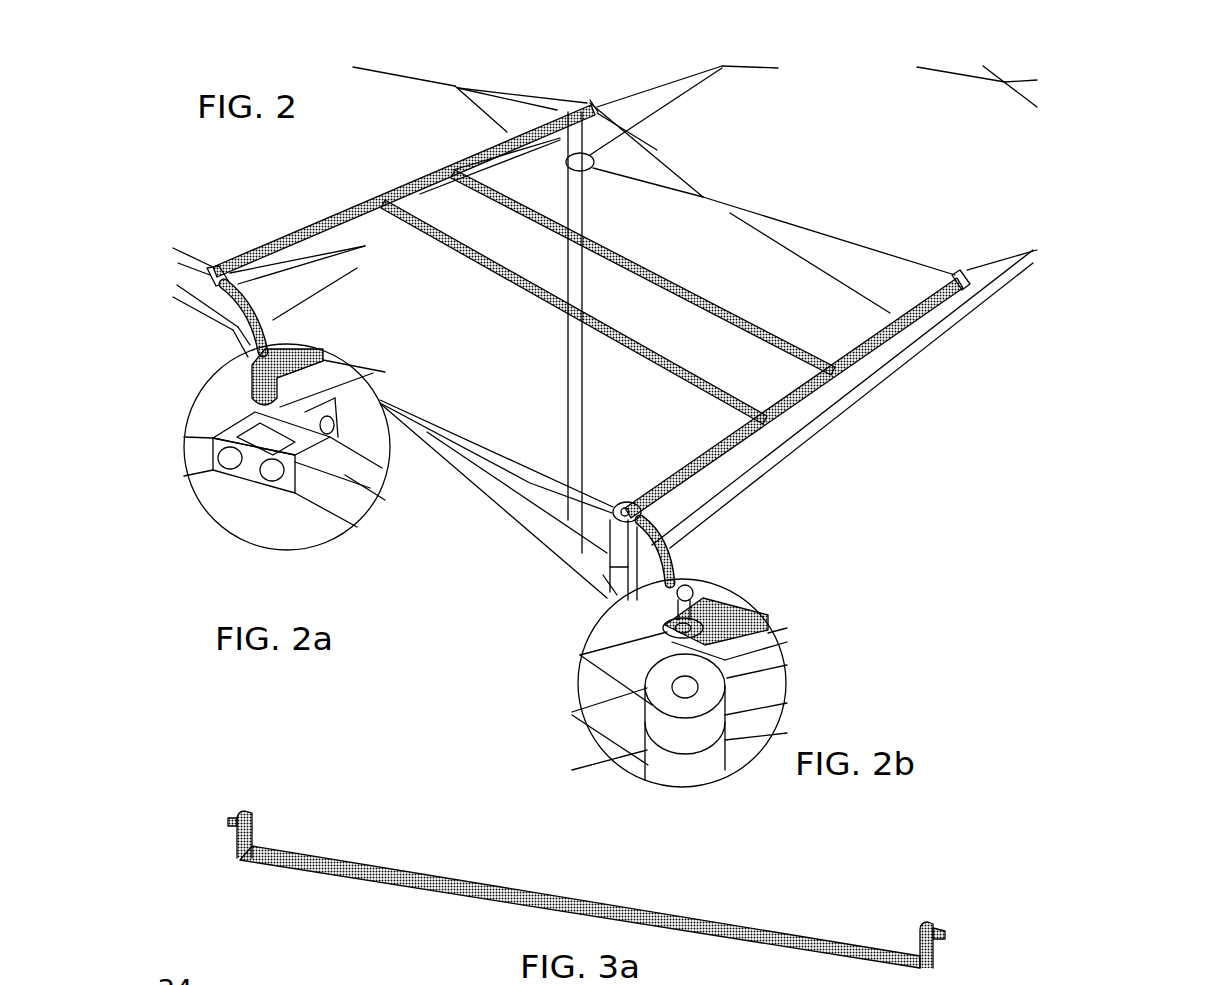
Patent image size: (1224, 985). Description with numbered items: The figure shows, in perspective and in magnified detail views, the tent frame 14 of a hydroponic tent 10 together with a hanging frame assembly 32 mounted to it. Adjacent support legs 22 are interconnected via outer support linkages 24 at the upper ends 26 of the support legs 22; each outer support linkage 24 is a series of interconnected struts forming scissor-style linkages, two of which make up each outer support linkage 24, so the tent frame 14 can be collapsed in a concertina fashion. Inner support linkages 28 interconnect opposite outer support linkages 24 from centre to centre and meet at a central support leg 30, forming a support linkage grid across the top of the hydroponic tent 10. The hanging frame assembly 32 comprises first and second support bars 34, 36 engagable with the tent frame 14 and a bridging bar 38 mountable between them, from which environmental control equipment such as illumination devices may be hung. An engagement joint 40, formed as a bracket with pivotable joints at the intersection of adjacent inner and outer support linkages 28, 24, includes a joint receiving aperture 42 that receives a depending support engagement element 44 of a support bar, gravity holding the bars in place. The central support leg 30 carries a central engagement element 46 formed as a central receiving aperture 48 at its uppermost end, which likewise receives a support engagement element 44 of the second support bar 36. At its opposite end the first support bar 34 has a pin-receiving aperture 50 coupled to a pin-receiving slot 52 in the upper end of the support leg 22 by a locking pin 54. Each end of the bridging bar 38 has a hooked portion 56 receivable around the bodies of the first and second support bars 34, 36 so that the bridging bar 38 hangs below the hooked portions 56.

In FIG. 2, the hydroponic tent 10 is at (872, 44).
In FIG. 2, the tent frame 14 is at (440, 134).
In FIG. 2, the support leg 22 is at (628, 548).
In FIG. 2B, the support leg 22 is at (662, 760).
In FIG. 2, the outer support linkage 24 is at (175, 289).
In FIG. 2, the upper end 26 is at (624, 500).
In FIG. 2, the inner support linkage 28 is at (458, 84).
In FIG. 2, the central support leg 30 is at (565, 355).
In FIG. 2, the hanging frame assembly 32 is at (390, 181).
In FIG. 2, the first support bar 34 is at (742, 442).
In FIG. 2B, the first support bar 34 is at (745, 618).
In FIG. 2, the second support bar 36 is at (292, 228).
In FIG. 2A, the second support bar 36 is at (250, 372).
In FIG. 2, the bridging bar 38 is at (660, 348).
In FIG. 3A, the bridging bar 38 is at (228, 803).
In FIG. 2A, the engagement joint 40 is at (258, 478).
In FIG. 2A, the joint receiving aperture 42 is at (222, 456).
In FIG. 2A, the support engagement element 44 is at (240, 380).
In FIG. 2, the central engagement element 46 is at (600, 105).
In FIG. 2, the central receiving aperture 48 is at (590, 105).
In FIG. 2B, the pin-receiving aperture 50 is at (665, 633).
In FIG. 2B, the pin-receiving slot 52 is at (668, 686).
In FIG. 2B, the locking pin 54 is at (702, 598).
In FIG. 3A, the hooked portion 56 is at (226, 820).